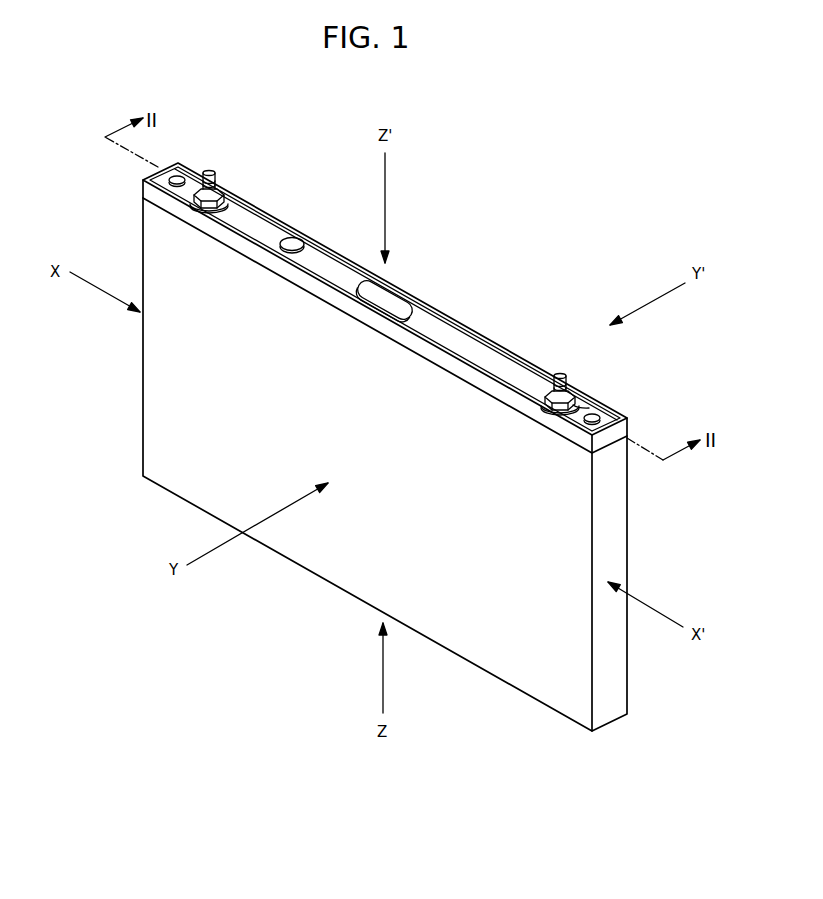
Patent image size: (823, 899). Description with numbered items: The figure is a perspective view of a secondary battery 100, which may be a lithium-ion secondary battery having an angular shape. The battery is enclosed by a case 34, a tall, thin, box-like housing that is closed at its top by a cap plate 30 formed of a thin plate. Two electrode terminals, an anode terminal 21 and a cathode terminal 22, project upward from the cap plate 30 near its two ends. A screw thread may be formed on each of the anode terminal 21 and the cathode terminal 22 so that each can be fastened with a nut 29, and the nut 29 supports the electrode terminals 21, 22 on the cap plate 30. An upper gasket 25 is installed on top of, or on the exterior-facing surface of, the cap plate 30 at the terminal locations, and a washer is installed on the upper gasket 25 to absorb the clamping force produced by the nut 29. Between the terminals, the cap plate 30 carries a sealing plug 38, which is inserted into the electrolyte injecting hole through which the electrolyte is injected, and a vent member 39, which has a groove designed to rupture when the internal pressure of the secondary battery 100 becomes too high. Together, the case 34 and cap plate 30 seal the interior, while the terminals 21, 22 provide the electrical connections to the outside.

The secondary battery 100 is at (535, 278).
The anode terminal 21 is at (209, 173).
The cathode terminal 22 is at (562, 378).
The upper gasket 25 is at (597, 407).
The nut 29 is at (577, 405).
The cap plate 30 is at (330, 270).
The case 34 is at (543, 673).
The sealing plug 38 is at (290, 244).
The vent member 39 is at (390, 302).